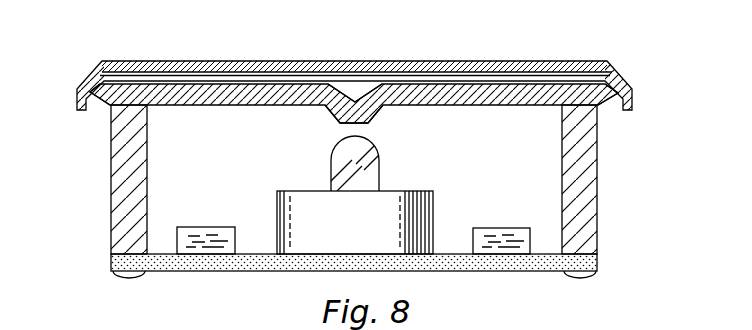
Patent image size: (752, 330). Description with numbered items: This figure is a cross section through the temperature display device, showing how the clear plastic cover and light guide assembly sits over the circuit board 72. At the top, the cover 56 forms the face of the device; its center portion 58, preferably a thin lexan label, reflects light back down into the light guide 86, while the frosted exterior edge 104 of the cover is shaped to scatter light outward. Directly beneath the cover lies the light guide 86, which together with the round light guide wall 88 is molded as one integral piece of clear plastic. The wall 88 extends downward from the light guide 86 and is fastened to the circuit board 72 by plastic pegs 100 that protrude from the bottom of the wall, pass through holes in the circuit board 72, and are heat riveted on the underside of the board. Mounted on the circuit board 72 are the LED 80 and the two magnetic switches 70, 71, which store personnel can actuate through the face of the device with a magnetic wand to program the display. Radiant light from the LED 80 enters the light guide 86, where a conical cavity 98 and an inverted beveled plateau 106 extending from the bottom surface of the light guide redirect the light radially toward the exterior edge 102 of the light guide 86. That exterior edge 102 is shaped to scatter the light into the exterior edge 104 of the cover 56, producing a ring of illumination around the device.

The cover 56 is at (484, 61).
The center portion 58 is at (210, 61).
The exterior edge of the light cover 104 is at (93, 86).
The conical cavity 98 is at (355, 100).
The light guide 86 is at (477, 101).
The inverted beveled plateau 106 is at (368, 123).
The exterior edge of the light guide 102 is at (100, 104).
The light guide wall 88 is at (592, 163).
The circuit board 72 is at (443, 266).
The pegs 100 is at (128, 277).
The magnetic switch 70 is at (200, 227).
The magnetic switch 71 is at (493, 228).
The LED 80 is at (365, 158).